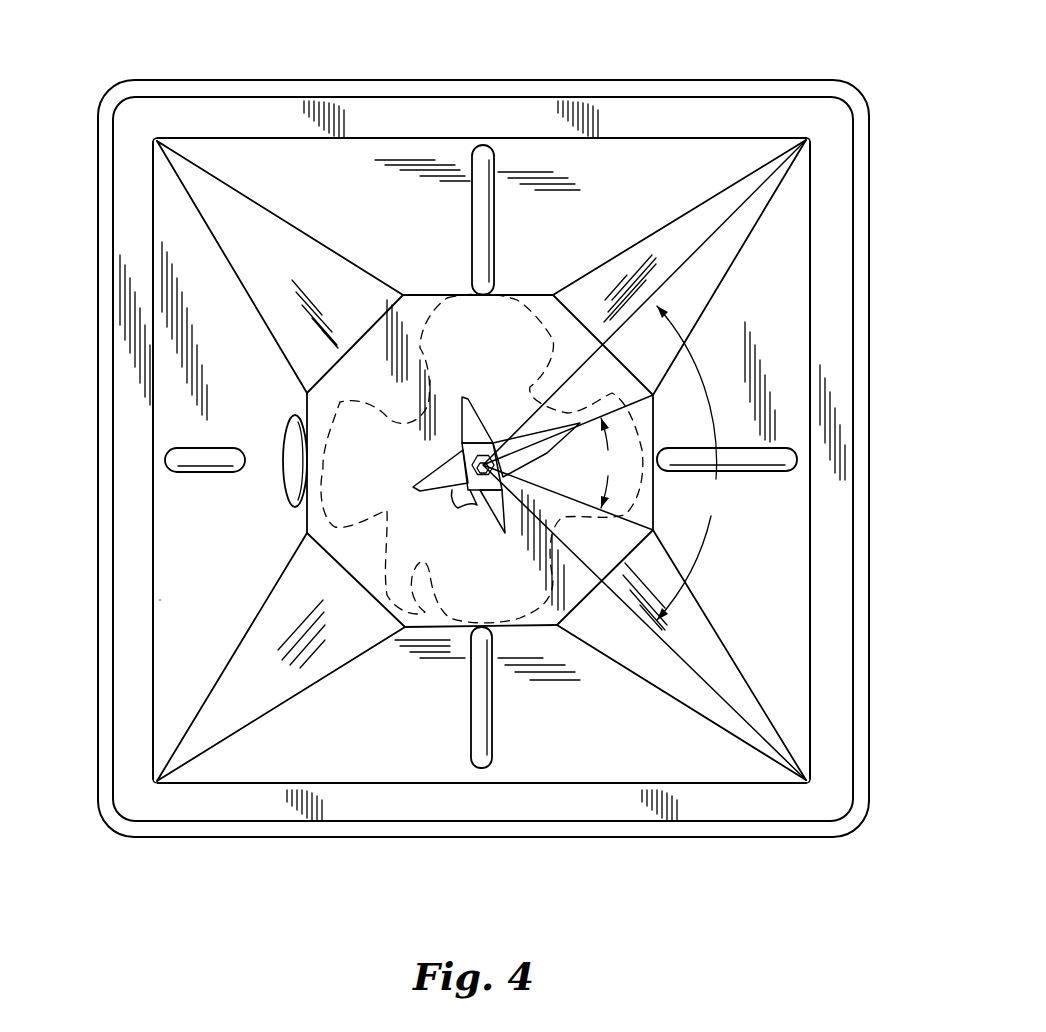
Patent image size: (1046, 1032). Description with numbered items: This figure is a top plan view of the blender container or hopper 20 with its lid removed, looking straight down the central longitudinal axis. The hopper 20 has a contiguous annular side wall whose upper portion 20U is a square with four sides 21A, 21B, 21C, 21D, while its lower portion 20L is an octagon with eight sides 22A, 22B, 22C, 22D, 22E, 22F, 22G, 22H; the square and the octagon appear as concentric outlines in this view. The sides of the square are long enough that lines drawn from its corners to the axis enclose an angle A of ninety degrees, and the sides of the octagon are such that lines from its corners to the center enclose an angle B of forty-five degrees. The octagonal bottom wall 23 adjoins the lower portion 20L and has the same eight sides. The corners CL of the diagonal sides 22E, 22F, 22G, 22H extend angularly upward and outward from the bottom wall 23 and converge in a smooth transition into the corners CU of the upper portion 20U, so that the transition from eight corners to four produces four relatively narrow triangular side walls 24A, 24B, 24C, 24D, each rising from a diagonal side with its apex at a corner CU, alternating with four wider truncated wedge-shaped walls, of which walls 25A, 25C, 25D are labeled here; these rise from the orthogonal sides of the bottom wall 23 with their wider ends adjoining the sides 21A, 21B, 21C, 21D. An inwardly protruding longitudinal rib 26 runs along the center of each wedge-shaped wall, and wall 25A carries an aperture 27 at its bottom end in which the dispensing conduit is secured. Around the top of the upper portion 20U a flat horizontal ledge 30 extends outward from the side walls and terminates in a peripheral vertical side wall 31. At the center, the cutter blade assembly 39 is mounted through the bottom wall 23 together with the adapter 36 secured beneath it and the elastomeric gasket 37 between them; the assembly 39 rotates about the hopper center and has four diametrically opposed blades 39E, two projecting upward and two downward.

The blender container or hopper 20 is at (475, 445).
The upper portion 20U is at (601, 136).
The lower portion 20L is at (424, 632).
The side 21A is at (154, 524).
The side 21B is at (810, 623).
The side 21C is at (354, 138).
The side 21D is at (366, 783).
The side 22A is at (308, 518).
The side 22B is at (653, 417).
The side 22C is at (437, 294).
The side 22D is at (517, 627).
The diagonal side 22E is at (611, 342).
The diagonal side 22F is at (377, 600).
The diagonal side 22G is at (372, 324).
The diagonal side 22H is at (577, 607).
The bottom wall 23 is at (484, 589).
The triangular side wall 24A is at (292, 684).
The triangular side wall 24B is at (725, 652).
The triangular side wall 24C is at (267, 247).
The triangular side wall 24D is at (714, 294).
The truncated wedge-shaped wall 25A is at (230, 601).
The truncated wedge-shaped wall 25C is at (579, 226).
The truncated wedge-shaped wall 25D is at (590, 732).
The longitudinal rib 26 is at (494, 225).
The aperture 27 is at (290, 434).
The horizontal ledge 30 is at (434, 107).
The peripheral vertical side wall 31 is at (312, 88).
The adapter 36 is at (482, 458).
The gasket 37 is at (482, 458).
The cutter blade assembly 39 is at (487, 468).
The blades 39E is at (471, 515).
The angle A is at (688, 463).
The angle B is at (608, 463).
The corners CL is at (403, 294).
The corners CU is at (163, 118).